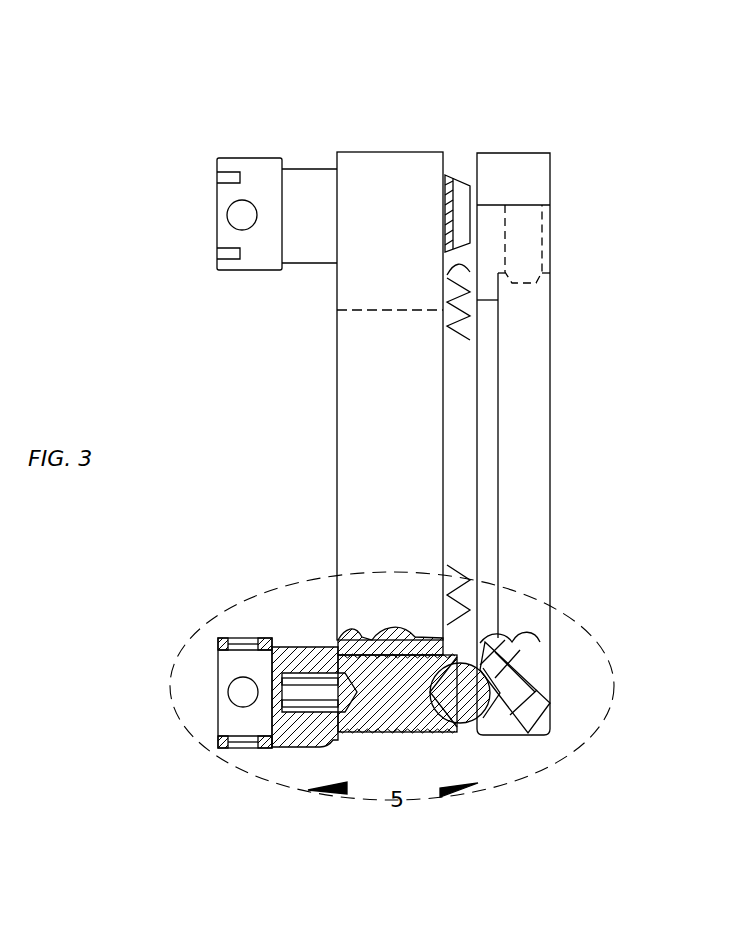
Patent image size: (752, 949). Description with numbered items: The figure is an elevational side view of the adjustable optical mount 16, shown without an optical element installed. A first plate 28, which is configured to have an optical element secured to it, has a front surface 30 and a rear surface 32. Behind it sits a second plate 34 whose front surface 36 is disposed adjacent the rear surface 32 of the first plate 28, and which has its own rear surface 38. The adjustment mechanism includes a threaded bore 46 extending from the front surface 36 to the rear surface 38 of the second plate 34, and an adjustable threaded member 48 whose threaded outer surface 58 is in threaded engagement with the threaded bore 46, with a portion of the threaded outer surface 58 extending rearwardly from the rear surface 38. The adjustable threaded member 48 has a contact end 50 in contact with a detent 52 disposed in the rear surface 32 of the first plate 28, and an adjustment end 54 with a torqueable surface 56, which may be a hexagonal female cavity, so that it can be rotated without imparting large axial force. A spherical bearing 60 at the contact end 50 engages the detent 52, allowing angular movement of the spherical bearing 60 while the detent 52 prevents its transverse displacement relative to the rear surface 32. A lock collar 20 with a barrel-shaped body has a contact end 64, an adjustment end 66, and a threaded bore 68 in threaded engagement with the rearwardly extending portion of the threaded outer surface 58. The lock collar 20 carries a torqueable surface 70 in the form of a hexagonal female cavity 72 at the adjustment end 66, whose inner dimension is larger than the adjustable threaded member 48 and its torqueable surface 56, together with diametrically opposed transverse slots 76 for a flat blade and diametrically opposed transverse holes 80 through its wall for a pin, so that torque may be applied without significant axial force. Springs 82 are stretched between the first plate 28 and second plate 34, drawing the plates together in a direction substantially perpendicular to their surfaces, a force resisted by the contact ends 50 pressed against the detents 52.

The adjustable optical mount 16 is at (413, 125).
The lock collar 20 is at (258, 160).
The first plate 28 is at (515, 153).
The front surface 30 is at (550, 181).
The rear surface 32 is at (472, 182).
The second plate 34 is at (378, 152).
The front surface 36 is at (448, 265).
The rear surface 38 is at (337, 340).
The threaded bore 46 is at (430, 655).
The adjustable threaded member 48 is at (395, 720).
The contact end 50 is at (493, 700).
The detent 52 is at (500, 680).
The adjustment end 54 is at (292, 650).
The torqueable surface 56 is at (320, 676).
The threaded outer surface 58 is at (363, 655).
The spherical bearing 60 is at (470, 713).
The contact end 64 is at (357, 740).
The adjustment end 66 is at (218, 650).
The threaded bore 68 is at (273, 740).
The torqueable surface 70 is at (300, 722).
The female cavity 72 is at (243, 665).
The transverse slots 76 is at (228, 178).
The transverse holes 80 is at (240, 215).
The springs 82 is at (463, 318).